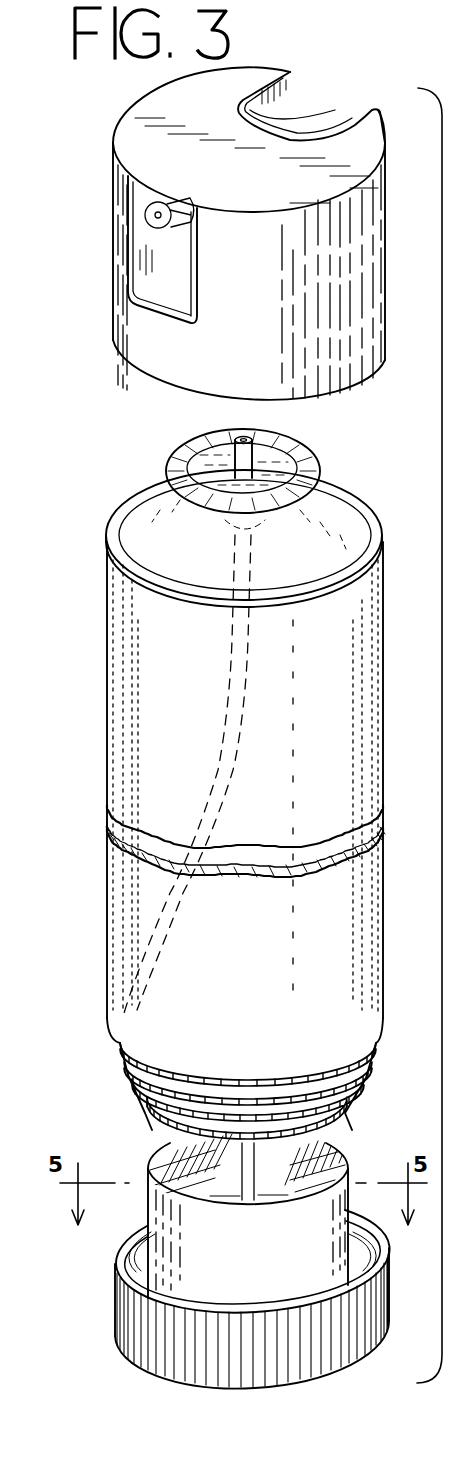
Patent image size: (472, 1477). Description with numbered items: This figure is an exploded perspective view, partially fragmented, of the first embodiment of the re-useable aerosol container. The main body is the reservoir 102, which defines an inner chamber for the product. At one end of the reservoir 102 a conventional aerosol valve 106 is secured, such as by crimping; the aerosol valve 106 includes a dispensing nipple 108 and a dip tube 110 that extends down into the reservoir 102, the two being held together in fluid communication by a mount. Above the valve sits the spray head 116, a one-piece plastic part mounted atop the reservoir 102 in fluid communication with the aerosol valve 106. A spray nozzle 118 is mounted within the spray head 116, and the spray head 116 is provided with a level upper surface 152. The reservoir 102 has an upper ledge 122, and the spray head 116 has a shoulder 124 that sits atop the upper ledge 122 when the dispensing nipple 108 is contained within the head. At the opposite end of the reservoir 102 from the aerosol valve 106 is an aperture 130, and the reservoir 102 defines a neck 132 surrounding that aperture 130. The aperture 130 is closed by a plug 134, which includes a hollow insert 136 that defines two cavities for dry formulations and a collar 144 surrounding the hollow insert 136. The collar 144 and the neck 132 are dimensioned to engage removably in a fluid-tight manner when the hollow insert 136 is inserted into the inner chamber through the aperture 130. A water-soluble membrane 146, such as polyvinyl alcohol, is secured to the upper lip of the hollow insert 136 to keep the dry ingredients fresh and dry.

The reservoir 102 is at (212, 669).
The aerosol valve 106 is at (283, 477).
The dispensing nipple 108 is at (232, 445).
The dip tube 110 is at (222, 738).
The spray head 116 is at (252, 272).
The spray nozzle 118 is at (148, 223).
The upper ledge 122 is at (123, 498).
The shoulder 124 is at (112, 346).
The aperture 130 is at (147, 1115).
The neck 132 is at (118, 1046).
The plug 134 is at (138, 1353).
The hollow insert 136 is at (254, 1264).
The collar 144 is at (115, 1278).
The water-soluble membrane 146 is at (273, 1173).
The level upper surface 152 is at (252, 187).